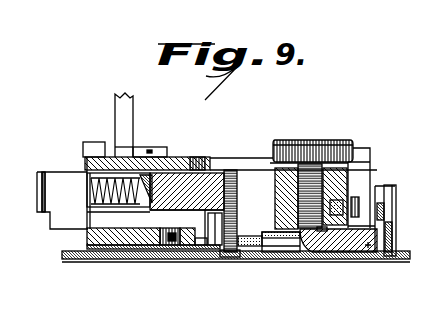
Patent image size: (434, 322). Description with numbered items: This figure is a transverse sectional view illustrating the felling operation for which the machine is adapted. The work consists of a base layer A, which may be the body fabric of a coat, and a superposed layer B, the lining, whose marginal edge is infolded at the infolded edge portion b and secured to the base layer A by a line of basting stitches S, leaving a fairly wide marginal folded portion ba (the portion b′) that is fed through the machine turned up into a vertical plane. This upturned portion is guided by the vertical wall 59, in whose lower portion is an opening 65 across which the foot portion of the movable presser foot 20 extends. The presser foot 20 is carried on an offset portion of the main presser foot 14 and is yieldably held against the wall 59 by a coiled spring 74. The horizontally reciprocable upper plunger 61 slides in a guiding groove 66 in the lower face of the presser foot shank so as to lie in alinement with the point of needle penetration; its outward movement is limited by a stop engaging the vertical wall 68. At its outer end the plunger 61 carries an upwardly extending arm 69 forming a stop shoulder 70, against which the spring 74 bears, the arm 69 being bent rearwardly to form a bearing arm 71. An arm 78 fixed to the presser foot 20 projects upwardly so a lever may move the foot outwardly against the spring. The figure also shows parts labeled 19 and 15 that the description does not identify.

The stem 19 is at (138, 106).
The arm 78 is at (95, 142).
The upwardly extending arm 69 is at (65, 180).
The bearing arm 71 is at (40, 178).
The spring seat 15 is at (152, 216).
The guiding groove 66 is at (180, 174).
The movable presser foot 20 is at (209, 188).
The opening 65 is at (252, 197).
The stop shoulder 70 is at (87, 205).
The coiled spring 74 is at (112, 197).
The upper plunger 61 is at (103, 260).
The superposed layer B is at (127, 215).
The vertical wall 68 is at (182, 258).
The infolded edge portion b is at (197, 258).
The vertical wall 59 is at (247, 257).
The basting stitches S is at (243, 258).
The marginal folded portion ba is at (253, 256).
The base layer A is at (332, 256).
The main presser foot 14 is at (366, 257).